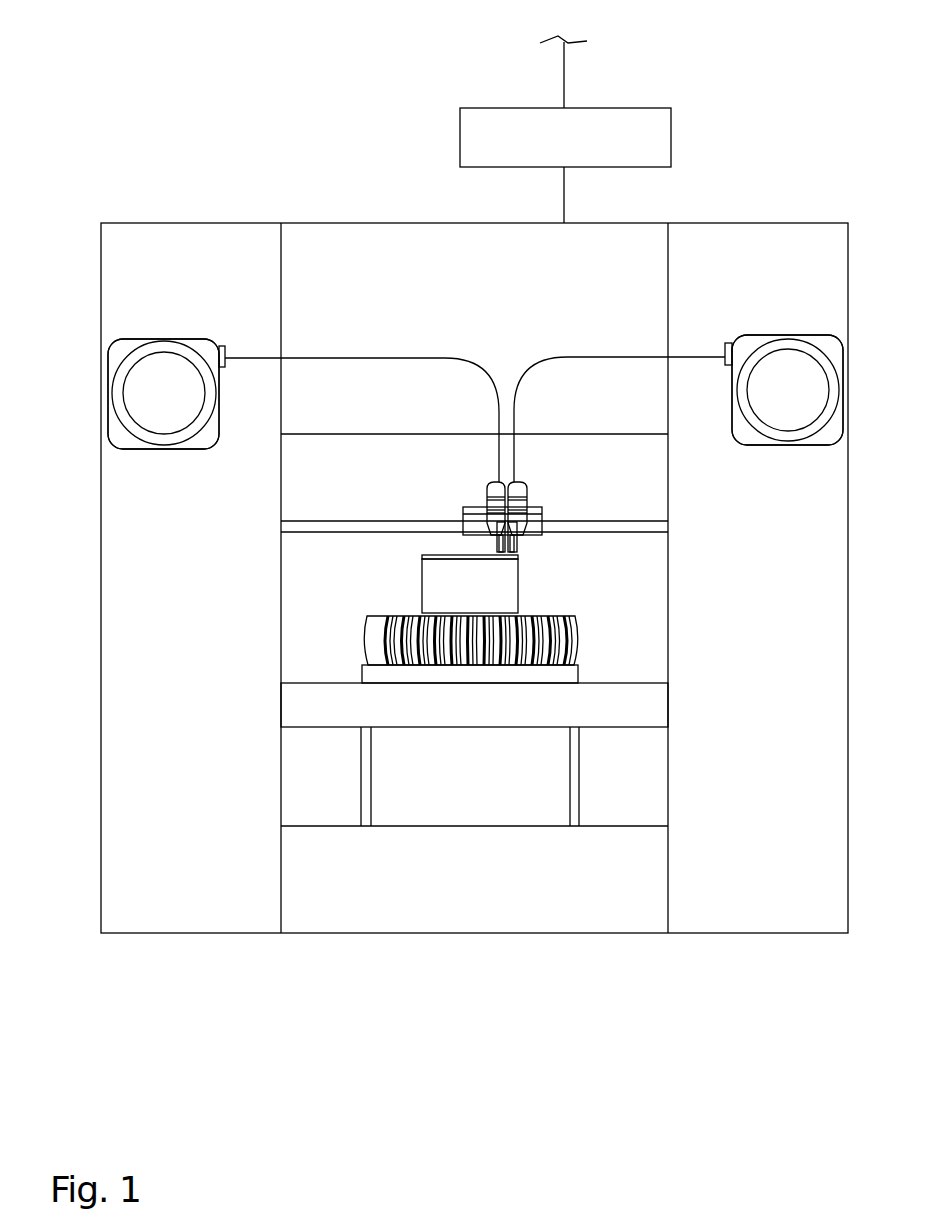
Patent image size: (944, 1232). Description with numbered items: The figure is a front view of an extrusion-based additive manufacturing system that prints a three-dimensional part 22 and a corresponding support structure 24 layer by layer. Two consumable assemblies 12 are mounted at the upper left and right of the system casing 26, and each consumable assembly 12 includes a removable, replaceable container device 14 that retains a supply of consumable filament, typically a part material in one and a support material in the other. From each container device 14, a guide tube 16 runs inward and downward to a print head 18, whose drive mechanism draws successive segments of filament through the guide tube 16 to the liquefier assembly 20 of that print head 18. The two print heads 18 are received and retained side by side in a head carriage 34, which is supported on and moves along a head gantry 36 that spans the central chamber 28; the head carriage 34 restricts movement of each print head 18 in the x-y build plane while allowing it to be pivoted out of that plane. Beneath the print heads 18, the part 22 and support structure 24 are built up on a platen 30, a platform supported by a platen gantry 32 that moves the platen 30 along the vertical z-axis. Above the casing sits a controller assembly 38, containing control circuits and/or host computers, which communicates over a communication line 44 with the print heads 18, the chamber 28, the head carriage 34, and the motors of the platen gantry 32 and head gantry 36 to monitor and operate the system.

The consumable assembly 12 is at (186, 316).
The container device 14 is at (203, 442).
The guide tube 16 is at (352, 358).
The print head 18 is at (465, 484).
The liquefier assembly 20 is at (498, 540).
The 3D part 22 is at (421, 583).
The support structure 24 is at (577, 675).
The system casing 26 is at (205, 222).
The chamber 28 is at (645, 620).
The platen 30 is at (640, 715).
The platen gantry 32 is at (590, 793).
The head carriage 34 is at (537, 510).
The head gantry 36 is at (355, 521).
The controller assembly 38 is at (671, 140).
The communication line 44 is at (565, 197).